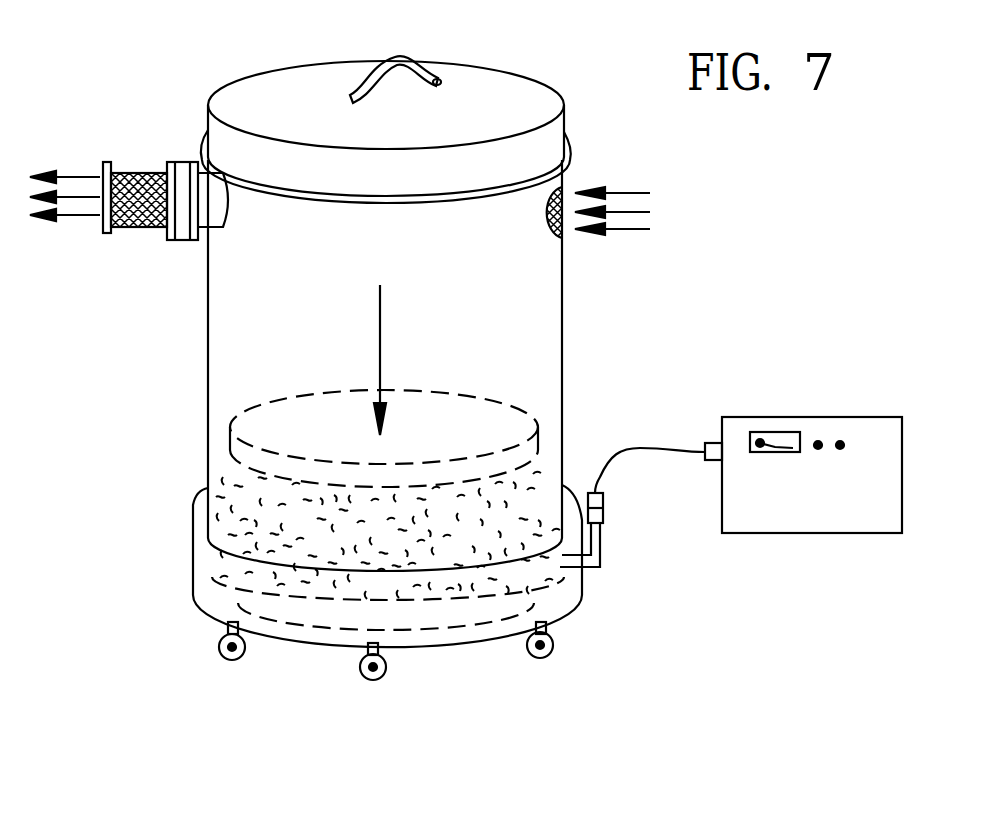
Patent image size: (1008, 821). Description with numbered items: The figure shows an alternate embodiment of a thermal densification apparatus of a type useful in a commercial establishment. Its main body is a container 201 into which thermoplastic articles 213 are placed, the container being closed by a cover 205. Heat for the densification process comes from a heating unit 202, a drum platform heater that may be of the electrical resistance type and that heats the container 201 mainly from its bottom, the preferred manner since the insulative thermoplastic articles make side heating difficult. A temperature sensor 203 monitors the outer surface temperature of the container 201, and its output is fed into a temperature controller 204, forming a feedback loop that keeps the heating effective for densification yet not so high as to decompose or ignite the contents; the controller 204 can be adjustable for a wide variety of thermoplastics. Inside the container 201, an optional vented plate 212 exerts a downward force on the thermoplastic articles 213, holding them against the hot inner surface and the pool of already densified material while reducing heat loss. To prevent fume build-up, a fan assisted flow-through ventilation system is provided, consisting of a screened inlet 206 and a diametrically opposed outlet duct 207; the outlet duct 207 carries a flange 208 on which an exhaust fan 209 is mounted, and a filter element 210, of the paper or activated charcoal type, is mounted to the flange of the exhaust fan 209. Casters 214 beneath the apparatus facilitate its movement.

The container 201 is at (545, 343).
The heating unit 202 is at (193, 537).
The temperature sensor 203 is at (603, 542).
The temperature controller 204 is at (812, 417).
The cover 205 is at (495, 80).
The screened inlet 206 is at (562, 235).
The outlet duct 207 is at (220, 205).
The flange 208 is at (197, 240).
The exhaust fan 209 is at (124, 208).
The filter element 210 is at (137, 227).
The vented plate 212 is at (430, 408).
The thermoplastic articles 213 is at (230, 490).
The casters 214 is at (233, 660).